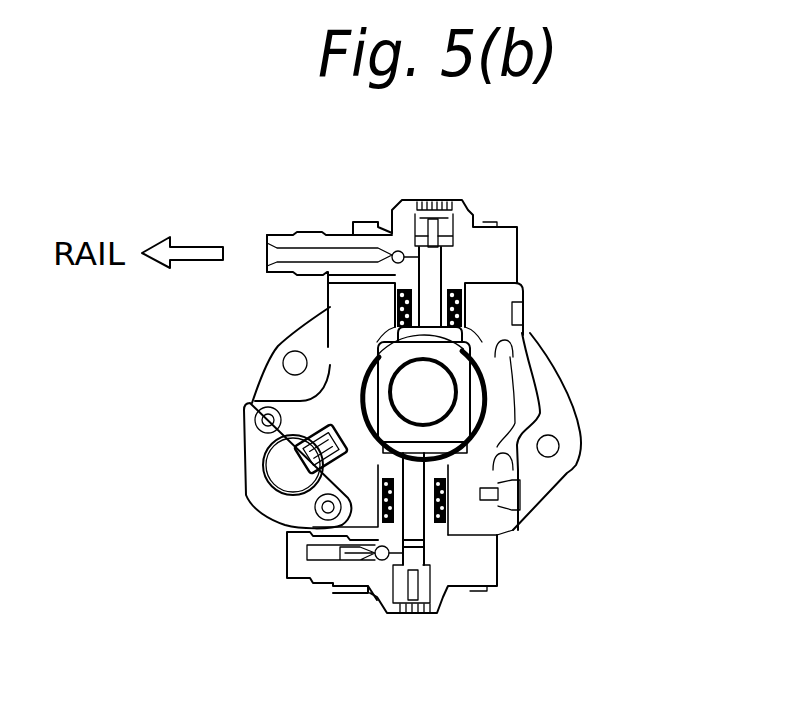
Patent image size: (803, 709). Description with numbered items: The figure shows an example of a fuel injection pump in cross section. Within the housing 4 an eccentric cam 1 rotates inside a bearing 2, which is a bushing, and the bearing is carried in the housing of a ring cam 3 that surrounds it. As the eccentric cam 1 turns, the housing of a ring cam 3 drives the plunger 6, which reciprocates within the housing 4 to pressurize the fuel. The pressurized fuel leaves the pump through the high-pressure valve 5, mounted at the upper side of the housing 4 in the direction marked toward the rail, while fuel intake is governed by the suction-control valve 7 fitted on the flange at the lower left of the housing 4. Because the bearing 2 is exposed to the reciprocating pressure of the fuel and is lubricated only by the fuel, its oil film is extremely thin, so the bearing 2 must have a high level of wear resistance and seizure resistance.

The eccentric cam 1 is at (422, 405).
The bearing 2 is at (460, 405).
The housing of a ring cam 3 is at (463, 356).
The housing 4 is at (503, 430).
The high-pressure valve 5 is at (392, 246).
The plunger 6 is at (450, 268).
The suction-control valve 7 is at (285, 468).